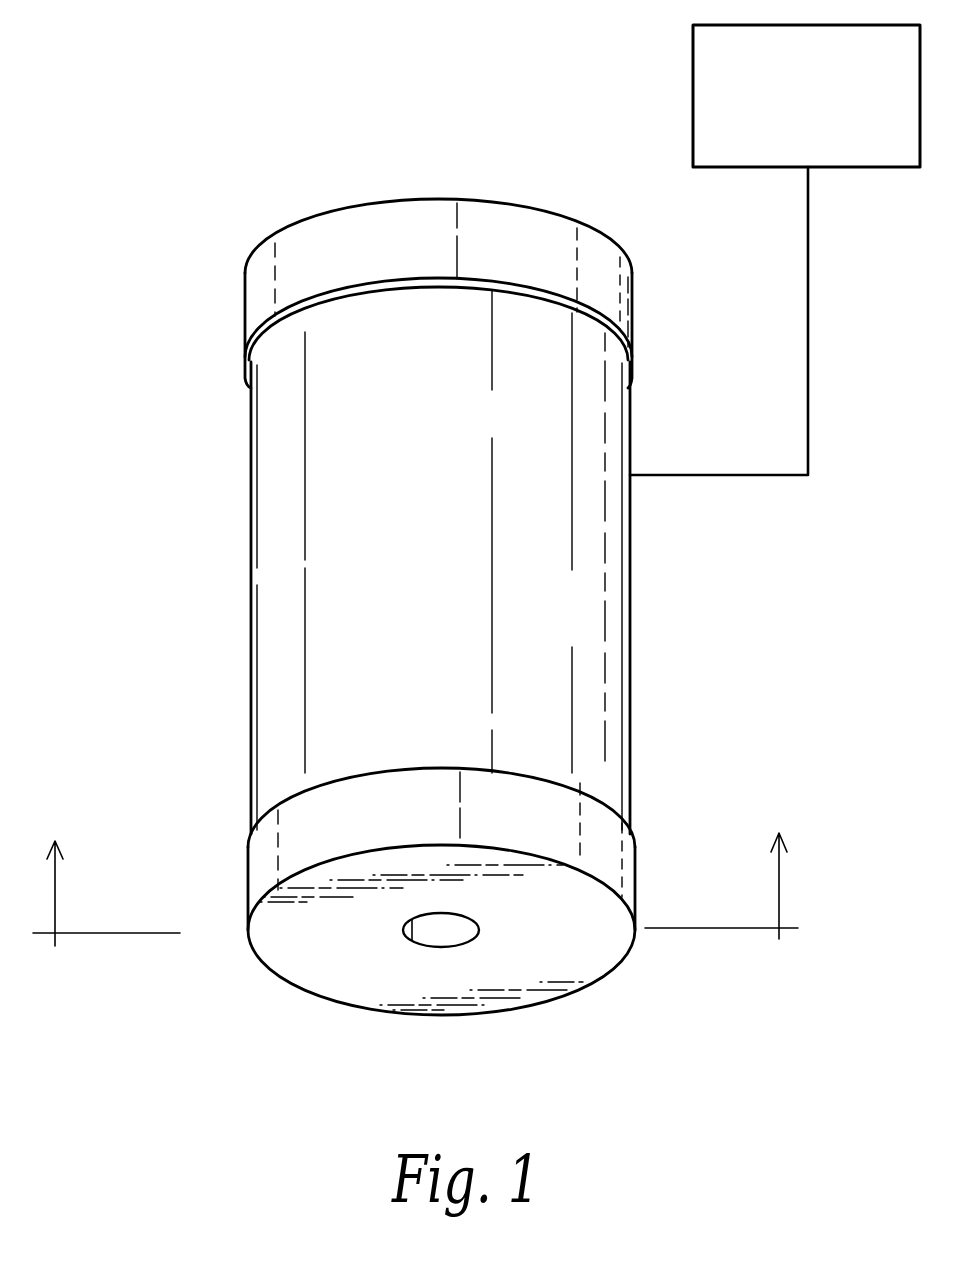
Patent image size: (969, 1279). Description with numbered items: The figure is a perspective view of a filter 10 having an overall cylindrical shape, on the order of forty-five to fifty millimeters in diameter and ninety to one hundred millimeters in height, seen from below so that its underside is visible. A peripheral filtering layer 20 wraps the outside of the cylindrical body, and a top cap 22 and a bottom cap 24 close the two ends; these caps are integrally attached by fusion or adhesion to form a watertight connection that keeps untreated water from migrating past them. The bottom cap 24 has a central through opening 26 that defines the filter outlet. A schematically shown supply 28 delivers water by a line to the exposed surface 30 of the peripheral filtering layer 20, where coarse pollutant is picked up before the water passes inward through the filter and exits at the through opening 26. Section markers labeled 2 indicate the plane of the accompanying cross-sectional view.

The filter 10 is at (213, 897).
The peripheral filtering layer 20 is at (270, 687).
The top cap 22 is at (262, 298).
The bottom cap 24 is at (302, 937).
The through opening 26 is at (428, 914).
The supply 28 is at (806, 96).
The exposed surface 30 is at (630, 681).
The section line 2- 2 is at (415, 874).